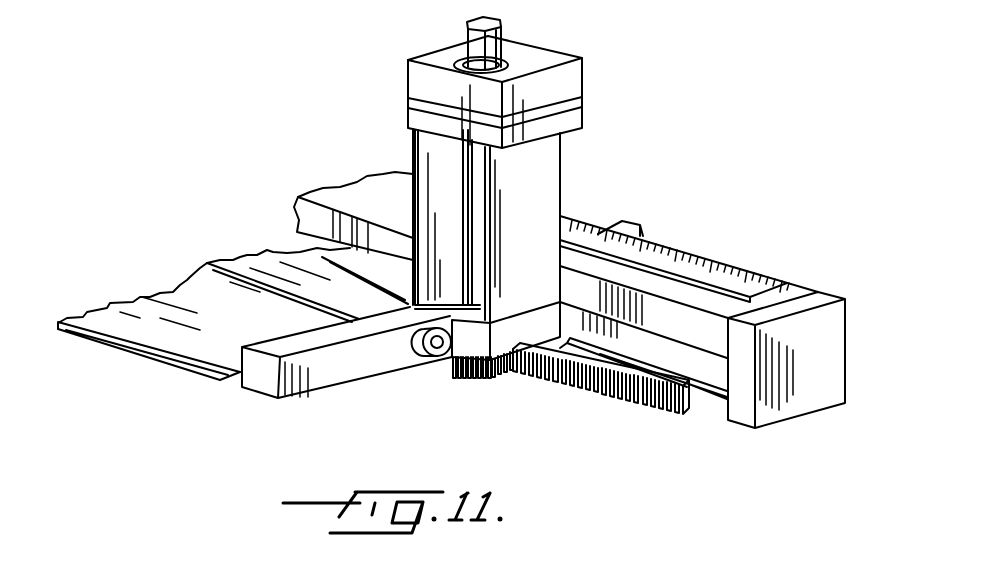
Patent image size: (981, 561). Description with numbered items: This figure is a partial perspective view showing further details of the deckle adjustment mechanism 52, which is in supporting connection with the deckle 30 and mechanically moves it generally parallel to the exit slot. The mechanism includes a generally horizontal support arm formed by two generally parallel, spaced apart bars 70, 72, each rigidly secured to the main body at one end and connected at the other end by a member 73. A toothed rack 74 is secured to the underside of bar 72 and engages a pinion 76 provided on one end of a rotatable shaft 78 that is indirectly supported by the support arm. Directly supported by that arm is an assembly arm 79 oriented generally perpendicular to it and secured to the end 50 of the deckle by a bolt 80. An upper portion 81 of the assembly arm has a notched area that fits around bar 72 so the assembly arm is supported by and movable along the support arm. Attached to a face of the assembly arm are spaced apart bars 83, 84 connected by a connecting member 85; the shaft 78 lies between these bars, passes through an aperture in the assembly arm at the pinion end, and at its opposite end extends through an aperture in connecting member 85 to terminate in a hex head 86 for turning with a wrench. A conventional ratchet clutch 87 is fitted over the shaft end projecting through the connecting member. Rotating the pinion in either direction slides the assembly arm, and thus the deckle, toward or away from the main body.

The deckle 30 is at (237, 262).
The end of the deckle 50 is at (233, 346).
The adjustment mechanism 52 is at (672, 178).
The bar 70 is at (672, 328).
The bar 72 is at (717, 410).
The member 73 is at (795, 305).
The toothed rack 74 is at (633, 400).
The pinion 76 is at (462, 385).
The rotatable shaft 78 is at (472, 212).
The assembly arm 79 is at (325, 378).
The bolt 80 is at (422, 346).
The upper portion of the assembly arm 81 is at (578, 322).
The bar 83 is at (413, 148).
The bar 84 is at (545, 182).
The connecting member 85 is at (578, 118).
The hex head 86 is at (498, 35).
The ratchet clutch 87 is at (595, 70).